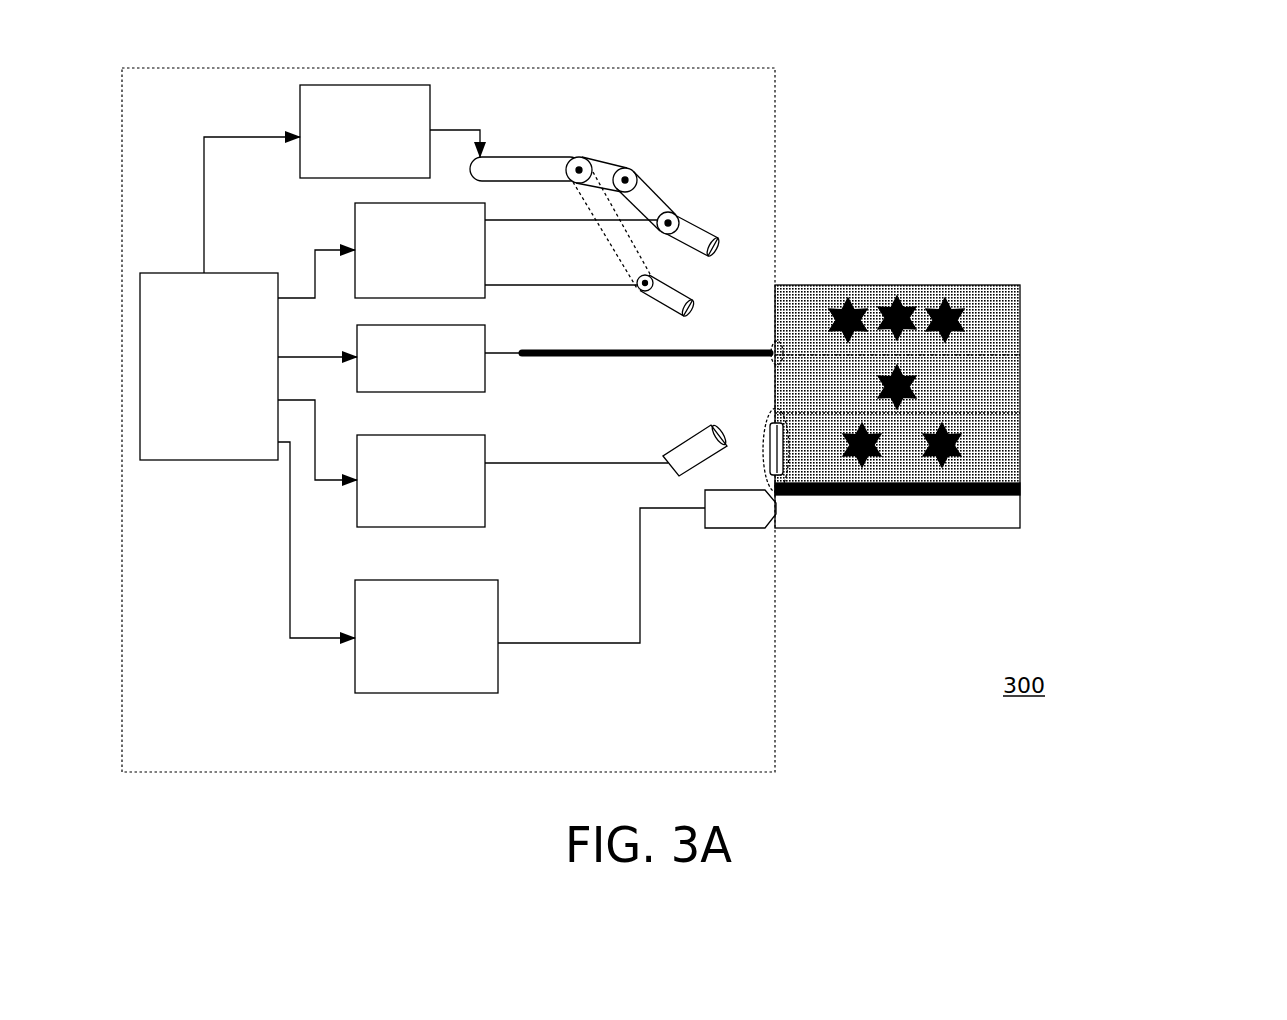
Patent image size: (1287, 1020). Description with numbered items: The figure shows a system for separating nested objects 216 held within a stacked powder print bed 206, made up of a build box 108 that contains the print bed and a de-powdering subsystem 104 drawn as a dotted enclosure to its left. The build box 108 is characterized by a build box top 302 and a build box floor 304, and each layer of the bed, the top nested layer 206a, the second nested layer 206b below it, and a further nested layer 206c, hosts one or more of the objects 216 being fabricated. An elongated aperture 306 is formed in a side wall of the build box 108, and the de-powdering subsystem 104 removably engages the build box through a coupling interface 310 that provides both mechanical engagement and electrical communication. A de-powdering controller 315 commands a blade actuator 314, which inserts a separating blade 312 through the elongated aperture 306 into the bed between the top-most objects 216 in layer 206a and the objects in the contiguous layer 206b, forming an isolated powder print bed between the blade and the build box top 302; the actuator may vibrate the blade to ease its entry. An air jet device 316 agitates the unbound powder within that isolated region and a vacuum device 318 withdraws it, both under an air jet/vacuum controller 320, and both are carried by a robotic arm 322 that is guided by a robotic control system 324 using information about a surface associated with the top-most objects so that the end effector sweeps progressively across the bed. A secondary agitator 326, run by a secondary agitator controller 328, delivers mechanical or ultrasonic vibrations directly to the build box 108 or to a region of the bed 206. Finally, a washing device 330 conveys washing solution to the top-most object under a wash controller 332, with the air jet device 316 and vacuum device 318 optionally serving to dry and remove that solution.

The de-powdering subsystem 104 is at (173, 773).
The build box 108 is at (1016, 386).
The stacked powder print bed 206 is at (1022, 357).
The top nested layer 206a is at (1008, 328).
The second nested layer 206b is at (1008, 388).
The third nested layer 206c is at (1008, 453).
The objects 216 is at (908, 307).
The build box top 302 is at (867, 283).
The build box floor 304 is at (963, 495).
The elongated aperture 306 is at (780, 343).
The coupling interface 310 is at (790, 452).
The separating blade 312 is at (605, 358).
The blade actuator 314 is at (485, 380).
The de-powdering controller 315 is at (215, 447).
The air jet device 316 is at (690, 228).
The vacuum device 318 is at (673, 295).
The air jet/vacuum controller 320 is at (365, 223).
The robotic arm 322 is at (609, 212).
The robotic control system 324 is at (315, 108).
The secondary agitator 326 is at (733, 522).
The secondary agitator controller 328 is at (427, 682).
The washing device 330 is at (697, 442).
The wash controller 332 is at (485, 502).